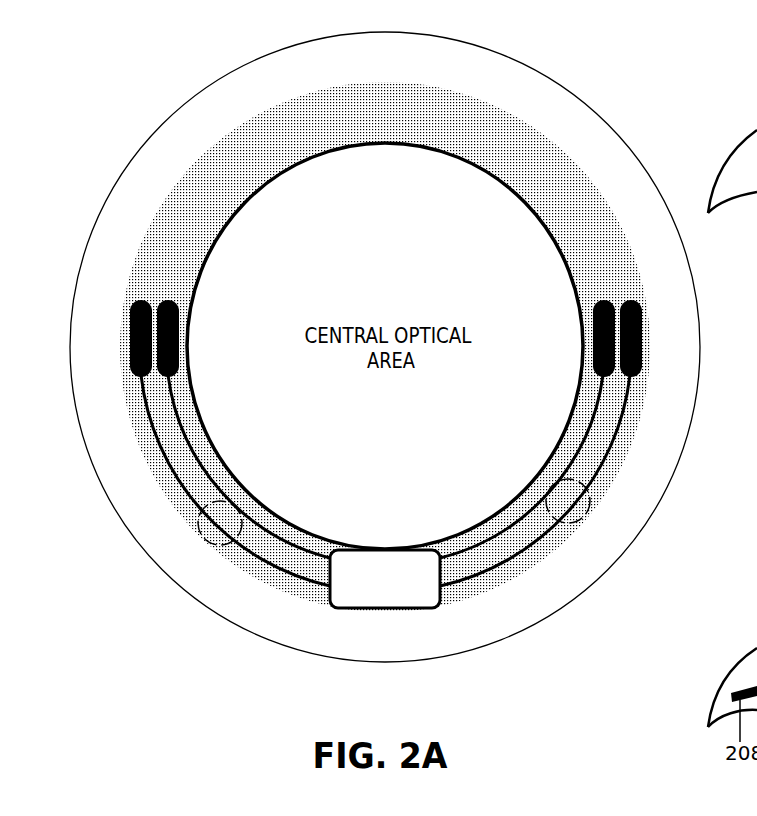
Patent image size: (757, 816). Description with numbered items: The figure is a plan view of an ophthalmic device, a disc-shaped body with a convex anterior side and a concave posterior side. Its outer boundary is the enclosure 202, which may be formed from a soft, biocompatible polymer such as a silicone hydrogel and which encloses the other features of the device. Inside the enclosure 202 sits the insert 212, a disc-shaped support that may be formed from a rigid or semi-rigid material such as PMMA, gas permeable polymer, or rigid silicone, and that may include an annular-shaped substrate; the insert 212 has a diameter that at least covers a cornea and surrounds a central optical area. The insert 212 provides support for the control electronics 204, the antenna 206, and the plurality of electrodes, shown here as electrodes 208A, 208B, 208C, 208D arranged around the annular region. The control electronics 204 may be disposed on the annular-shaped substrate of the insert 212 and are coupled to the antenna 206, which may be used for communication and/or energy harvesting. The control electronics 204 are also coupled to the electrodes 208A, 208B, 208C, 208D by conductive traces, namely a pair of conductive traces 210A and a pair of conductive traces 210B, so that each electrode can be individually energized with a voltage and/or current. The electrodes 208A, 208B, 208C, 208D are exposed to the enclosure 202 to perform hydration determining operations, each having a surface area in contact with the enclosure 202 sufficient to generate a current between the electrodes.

The enclosure 202 is at (563, 88).
The control electronics 204 is at (385, 579).
The antenna 206 is at (467, 535).
The electrode 208A is at (136, 382).
The electrode 208B is at (167, 300).
The electrode 208C is at (631, 378).
The electrode 208D is at (603, 298).
The pair of conductive traces 210A is at (200, 533).
The pair of conductive traces 210B is at (597, 512).
The insert 212 is at (278, 116).